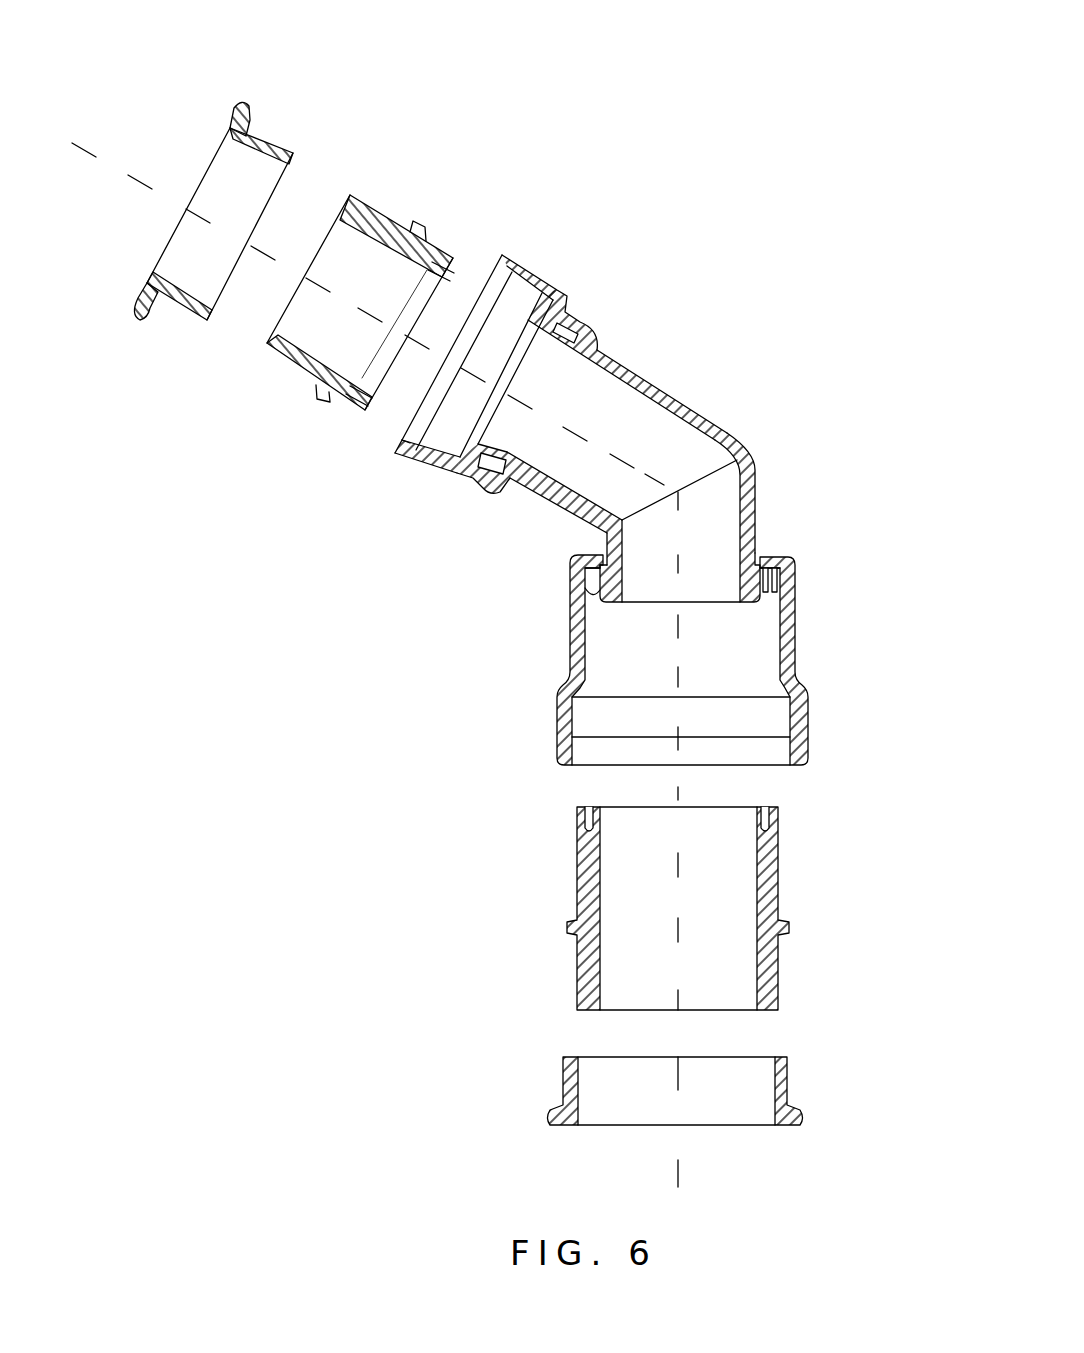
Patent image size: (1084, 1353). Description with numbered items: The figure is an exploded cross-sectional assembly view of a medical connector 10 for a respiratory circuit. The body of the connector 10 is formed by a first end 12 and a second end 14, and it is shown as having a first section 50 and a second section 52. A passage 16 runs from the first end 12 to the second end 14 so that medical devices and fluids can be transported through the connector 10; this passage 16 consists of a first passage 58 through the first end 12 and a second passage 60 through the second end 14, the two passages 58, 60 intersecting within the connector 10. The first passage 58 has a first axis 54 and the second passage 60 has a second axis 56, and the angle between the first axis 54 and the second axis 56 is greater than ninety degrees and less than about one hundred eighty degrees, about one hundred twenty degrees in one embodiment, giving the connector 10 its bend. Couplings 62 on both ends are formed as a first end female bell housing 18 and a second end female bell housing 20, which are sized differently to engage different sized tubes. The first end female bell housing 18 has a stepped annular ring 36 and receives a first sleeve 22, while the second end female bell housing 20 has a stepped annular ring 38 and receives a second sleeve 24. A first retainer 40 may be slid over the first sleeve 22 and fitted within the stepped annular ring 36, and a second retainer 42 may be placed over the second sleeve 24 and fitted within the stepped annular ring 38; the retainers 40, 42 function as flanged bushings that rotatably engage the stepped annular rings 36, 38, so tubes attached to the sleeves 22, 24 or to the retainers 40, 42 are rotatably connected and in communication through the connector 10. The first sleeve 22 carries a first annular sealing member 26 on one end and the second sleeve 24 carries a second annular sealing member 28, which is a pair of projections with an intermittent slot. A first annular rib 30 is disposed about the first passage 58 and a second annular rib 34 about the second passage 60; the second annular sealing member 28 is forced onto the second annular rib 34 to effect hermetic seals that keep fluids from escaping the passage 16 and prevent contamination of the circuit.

The connector 10 is at (776, 187).
The first end 12 is at (756, 560).
The second end 14 is at (604, 348).
The passage 16 is at (655, 432).
The first end female bell housing 18 is at (572, 676).
The second end female bell housing 20 is at (483, 480).
The first sleeve 22 is at (780, 870).
The second sleeve 24 is at (385, 222).
The first annular sealing member 26 is at (778, 806).
The second annular sealing member 28 is at (444, 250).
The first annular rib 30 is at (776, 582).
The second annular rib 34 is at (582, 328).
The stepped annular ring 36 is at (797, 735).
The stepped annular ring 38 is at (395, 452).
The first retainer 40 is at (790, 1092).
The second retainer 42 is at (263, 137).
The first section 50 is at (752, 502).
The second section 52 is at (652, 395).
The first axis 54 is at (677, 787).
The second axis 56 is at (426, 458).
The first passage 58 is at (715, 540).
The second passage 60 is at (603, 400).
The couplings 62 is at (553, 258).